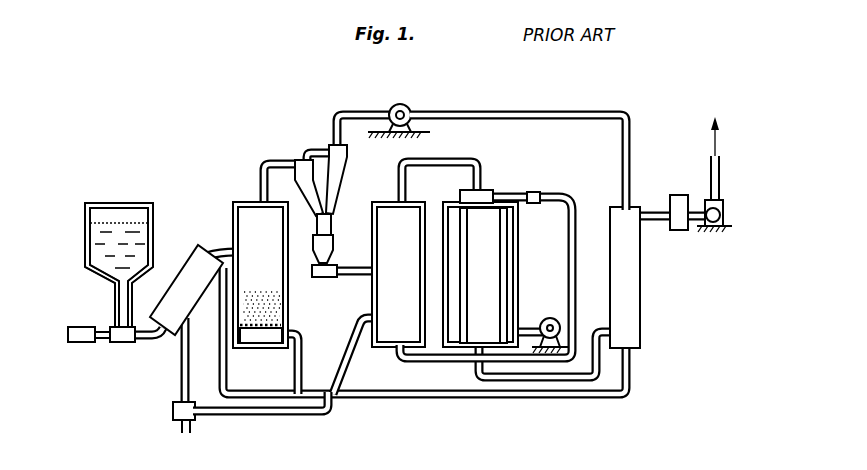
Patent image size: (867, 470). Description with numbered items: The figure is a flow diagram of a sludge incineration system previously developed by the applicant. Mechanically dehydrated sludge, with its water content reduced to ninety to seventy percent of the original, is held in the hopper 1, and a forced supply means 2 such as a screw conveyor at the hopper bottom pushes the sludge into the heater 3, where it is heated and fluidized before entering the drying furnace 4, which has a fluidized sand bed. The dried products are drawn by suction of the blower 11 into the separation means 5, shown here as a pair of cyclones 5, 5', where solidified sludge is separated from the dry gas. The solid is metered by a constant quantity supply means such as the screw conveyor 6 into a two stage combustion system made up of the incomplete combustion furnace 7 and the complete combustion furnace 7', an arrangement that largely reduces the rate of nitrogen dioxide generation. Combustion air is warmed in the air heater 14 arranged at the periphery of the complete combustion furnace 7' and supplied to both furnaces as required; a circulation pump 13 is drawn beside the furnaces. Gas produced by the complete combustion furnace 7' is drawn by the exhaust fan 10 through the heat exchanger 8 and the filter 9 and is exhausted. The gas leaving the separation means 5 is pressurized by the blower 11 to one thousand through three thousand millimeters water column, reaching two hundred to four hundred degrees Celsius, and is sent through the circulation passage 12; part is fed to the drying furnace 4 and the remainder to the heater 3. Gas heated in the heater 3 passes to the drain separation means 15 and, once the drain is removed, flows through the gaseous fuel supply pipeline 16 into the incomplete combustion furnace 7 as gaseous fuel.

The hopper 1 is at (139, 206).
The forced supply means 2 is at (113, 328).
The heater 3 is at (196, 266).
The drying furnace 4 is at (245, 210).
The separation means 5 is at (297, 169).
The second cyclone separator 5' is at (328, 172).
The screw conveyor 6 is at (322, 280).
The incomplete combustion furnace 7 is at (396, 259).
The complete combustion furnace 7' is at (483, 261).
The heat exchanger 8 is at (609, 216).
The filter 9 is at (676, 200).
The exhaust fan 10 is at (714, 172).
The blower 11 is at (398, 104).
The circulation passage 12 is at (526, 111).
The circulation pump 13 is at (552, 319).
The air heater 14 is at (525, 270).
The drain separation means 15 is at (174, 408).
The gaseous fuel supply pipeline 16 is at (308, 416).